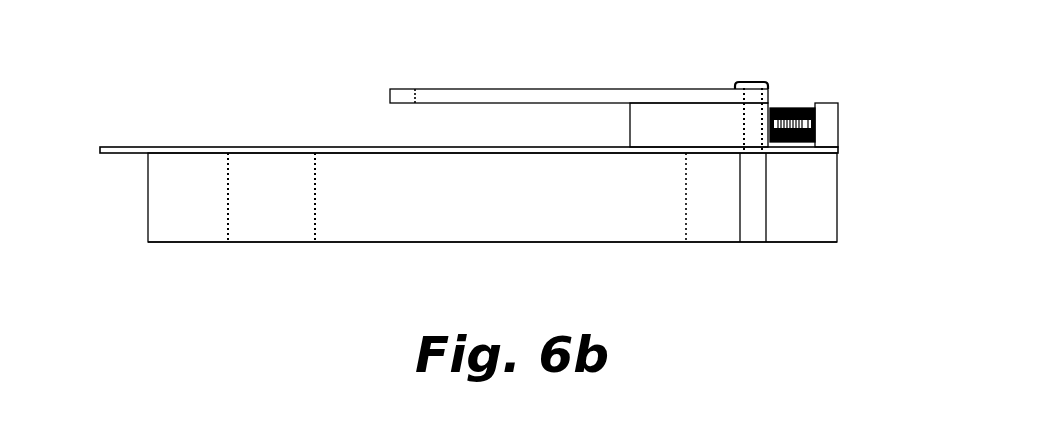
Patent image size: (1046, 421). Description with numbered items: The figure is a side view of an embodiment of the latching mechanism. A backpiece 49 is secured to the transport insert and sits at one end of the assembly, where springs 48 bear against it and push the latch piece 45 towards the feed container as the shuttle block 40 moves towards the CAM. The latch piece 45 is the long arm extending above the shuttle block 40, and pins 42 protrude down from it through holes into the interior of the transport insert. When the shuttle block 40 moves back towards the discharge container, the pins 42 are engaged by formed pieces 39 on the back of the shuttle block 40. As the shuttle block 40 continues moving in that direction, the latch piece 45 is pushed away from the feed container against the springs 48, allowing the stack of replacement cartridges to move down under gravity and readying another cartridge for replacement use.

The formed pieces 39 is at (492, 270).
The shuttle block 40 is at (468, 165).
The pins 42 is at (745, 82).
The latch piece 45 is at (655, 88).
The springs 48 is at (810, 40).
The backpiece 49 is at (838, 125).